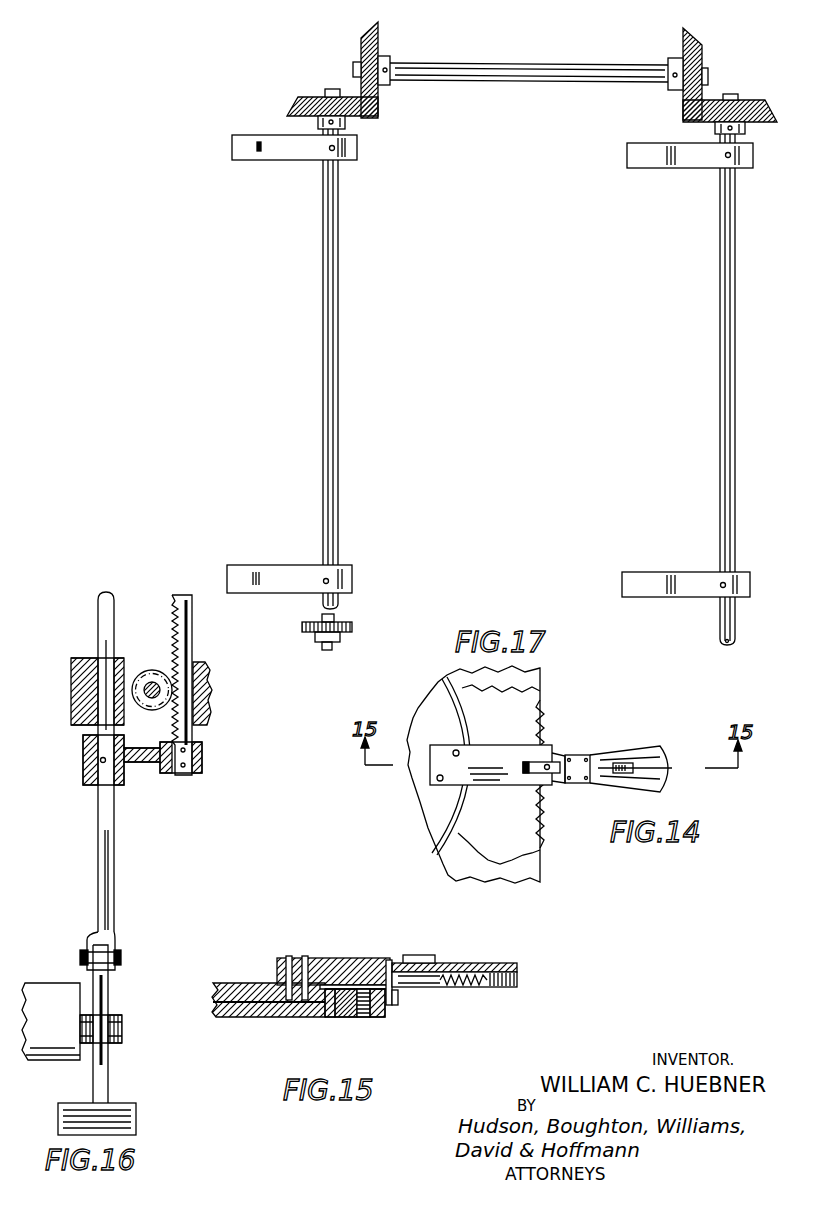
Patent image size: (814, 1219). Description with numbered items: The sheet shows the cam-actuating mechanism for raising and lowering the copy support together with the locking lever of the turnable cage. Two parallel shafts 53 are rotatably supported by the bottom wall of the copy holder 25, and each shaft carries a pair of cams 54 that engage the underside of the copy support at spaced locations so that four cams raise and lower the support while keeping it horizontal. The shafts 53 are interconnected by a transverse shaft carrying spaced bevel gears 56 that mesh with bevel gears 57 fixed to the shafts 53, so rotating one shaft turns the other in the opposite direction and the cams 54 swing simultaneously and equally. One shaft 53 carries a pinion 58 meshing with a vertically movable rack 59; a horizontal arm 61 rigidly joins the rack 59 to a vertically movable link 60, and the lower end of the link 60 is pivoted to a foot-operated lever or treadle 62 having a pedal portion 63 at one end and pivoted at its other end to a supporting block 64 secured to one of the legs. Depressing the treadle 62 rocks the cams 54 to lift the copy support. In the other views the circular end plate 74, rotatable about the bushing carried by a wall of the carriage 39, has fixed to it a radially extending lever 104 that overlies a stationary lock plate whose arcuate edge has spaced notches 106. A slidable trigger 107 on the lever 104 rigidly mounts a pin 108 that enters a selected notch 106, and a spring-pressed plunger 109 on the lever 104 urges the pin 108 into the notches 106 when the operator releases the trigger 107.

In FIG. 16, the copy holder 25 is at (71, 697).
In FIG. 15, the carriage 39 is at (345, 1019).
In FIG. 17, the shaft 53 is at (338, 365).
In FIG. 16, the shaft 53 is at (154, 679).
In FIG. 17, the cam 54 is at (357, 149).
In FIG. 17, the bevel gear 56 is at (379, 34).
In FIG. 17, the bevel gear 57 is at (330, 95).
In FIG. 17, the pinion 58 is at (302, 627).
In FIG. 16, the pinion 58 is at (156, 710).
In FIG. 16, the rack 59 is at (192, 637).
In FIG. 16, the link 60 is at (141, 862).
In FIG. 16, the horizontal arm 61 is at (133, 766).
In FIG. 16, the foot-operated lever or treadle 62 is at (105, 1073).
In FIG. 16, the pedal portion 63 is at (126, 1105).
In FIG. 16, the supporting block 64 is at (56, 989).
In FIG. 15, the circular end plate 74 is at (251, 985).
In FIG. 14, the lever 104 is at (511, 736).
In FIG. 15, the lever 104 is at (357, 945).
In FIG. 14, the lock keyways or notches 106 is at (545, 707).
In FIG. 15, the slidable trigger or finger grip 107 is at (467, 963).
In FIG. 15, the pin 108 is at (397, 1000).
In FIG. 15, the spring-pressed plunger 109 is at (432, 979).